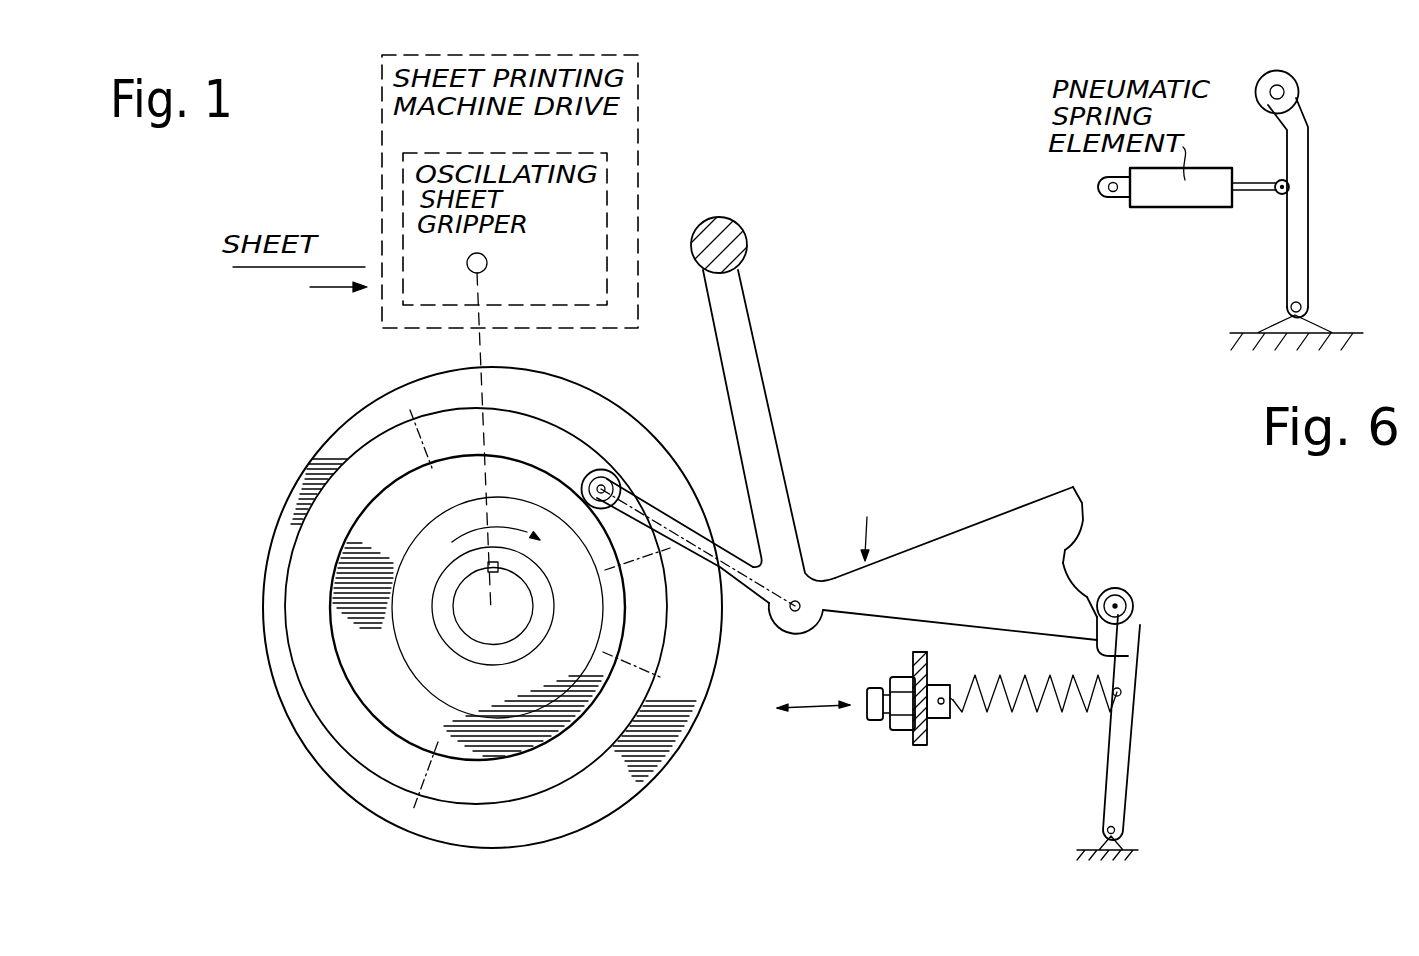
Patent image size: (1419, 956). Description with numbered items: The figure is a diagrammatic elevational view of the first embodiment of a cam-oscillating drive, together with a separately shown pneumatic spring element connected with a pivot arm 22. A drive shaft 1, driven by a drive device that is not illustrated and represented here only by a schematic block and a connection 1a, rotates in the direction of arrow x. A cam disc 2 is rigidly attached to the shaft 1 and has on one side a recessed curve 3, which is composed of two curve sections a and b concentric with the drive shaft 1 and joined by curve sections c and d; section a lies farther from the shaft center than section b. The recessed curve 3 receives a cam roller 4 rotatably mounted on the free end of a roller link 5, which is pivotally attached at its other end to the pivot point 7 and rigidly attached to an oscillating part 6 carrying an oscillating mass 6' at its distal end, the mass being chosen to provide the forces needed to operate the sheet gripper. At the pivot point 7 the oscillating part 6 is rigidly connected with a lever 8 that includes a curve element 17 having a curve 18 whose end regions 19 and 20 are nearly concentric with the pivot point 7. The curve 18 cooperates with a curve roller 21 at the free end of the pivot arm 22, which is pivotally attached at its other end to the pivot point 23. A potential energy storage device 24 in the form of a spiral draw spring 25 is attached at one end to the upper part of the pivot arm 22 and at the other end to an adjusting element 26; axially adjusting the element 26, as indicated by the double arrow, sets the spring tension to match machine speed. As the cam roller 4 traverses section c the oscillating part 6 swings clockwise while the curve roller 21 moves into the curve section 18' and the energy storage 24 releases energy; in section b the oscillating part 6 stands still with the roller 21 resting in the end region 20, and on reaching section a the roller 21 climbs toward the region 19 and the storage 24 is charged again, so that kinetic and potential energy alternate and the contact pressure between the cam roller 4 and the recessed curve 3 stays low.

In FIG. 1, the drive shaft 1 is at (487, 262).
In FIG. 1, the gripper drive connection 1a is at (481, 352).
In FIG. 1, the cam disc 2 is at (350, 793).
In FIG. 1, the recessed curve 3 is at (570, 748).
In FIG. 1, the cam roller 4 is at (608, 458).
In FIG. 1, the roller link 5 is at (683, 530).
In FIG. 1, the oscillating part 6 is at (769, 425).
In FIG. 1, the oscillating mass 6' is at (739, 224).
In FIG. 1, the pivot point 7 is at (793, 613).
In FIG. 1, the lever 8 is at (869, 528).
In FIG. 1, the curve element 17 is at (980, 540).
In FIG. 1, the curve 18 is at (1132, 548).
In FIG. 1, the curve section 18' is at (1126, 576).
In FIG. 1, the end region 19 is at (1080, 493).
In FIG. 1, the end region 20 is at (1140, 650).
In FIG. 1, the curve roller 21 is at (1133, 593).
In FIG. 6, the curve roller 21 is at (1287, 73).
In FIG. 1, the pivot arm 22 is at (1119, 730).
In FIG. 6, the pivot arm 22 is at (1296, 203).
In FIG. 1, the pivot point 23 is at (1120, 818).
In FIG. 6, the pivot point 23 is at (1298, 303).
In FIG. 1, the potential energy storage device 24 is at (1003, 725).
In FIG. 1, the spiral draw spring 25 is at (1077, 707).
In FIG. 1, the adjusting element 26 is at (945, 722).
In FIG. 1, the curve section a is at (292, 591).
In FIG. 1, the curve section b is at (643, 610).
In FIG. 1, the curve section c is at (548, 436).
In FIG. 1, the curve section d is at (483, 800).
In FIG. 1, the arrow X x is at (496, 523).